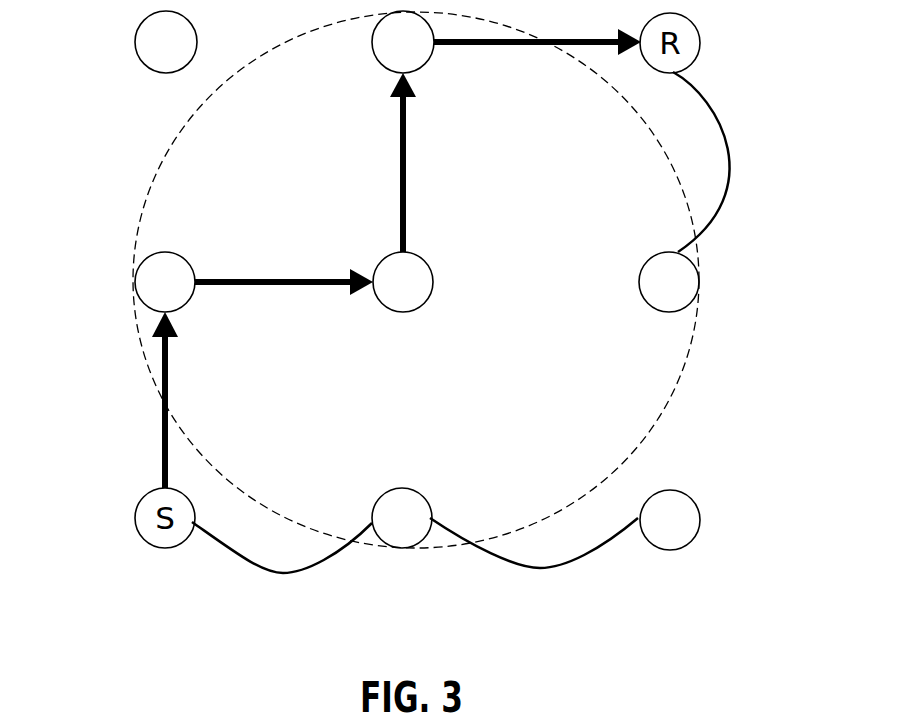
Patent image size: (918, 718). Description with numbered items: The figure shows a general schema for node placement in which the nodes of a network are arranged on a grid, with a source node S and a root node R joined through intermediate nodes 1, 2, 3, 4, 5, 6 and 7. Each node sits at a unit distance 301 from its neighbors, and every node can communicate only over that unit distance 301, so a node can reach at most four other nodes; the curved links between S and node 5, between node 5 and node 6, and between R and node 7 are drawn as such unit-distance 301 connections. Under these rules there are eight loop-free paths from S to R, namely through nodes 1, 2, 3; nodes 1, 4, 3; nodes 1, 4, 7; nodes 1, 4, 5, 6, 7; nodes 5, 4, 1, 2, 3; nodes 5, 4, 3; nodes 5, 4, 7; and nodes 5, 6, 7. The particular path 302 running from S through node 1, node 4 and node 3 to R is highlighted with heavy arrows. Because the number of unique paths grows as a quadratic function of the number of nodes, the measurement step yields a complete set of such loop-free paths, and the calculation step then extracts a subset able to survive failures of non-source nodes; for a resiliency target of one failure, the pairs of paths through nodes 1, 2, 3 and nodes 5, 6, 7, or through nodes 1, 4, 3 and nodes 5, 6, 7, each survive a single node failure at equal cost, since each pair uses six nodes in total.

The unit distance 301 is at (726, 127).
The path (1,4,3) 302 is at (293, 279).
The node 1 is at (165, 282).
The node 2 is at (166, 42).
The node 3 is at (403, 42).
The node 4 is at (403, 282).
The node 5 is at (402, 518).
The node 6 is at (670, 520).
The node 7 is at (669, 282).